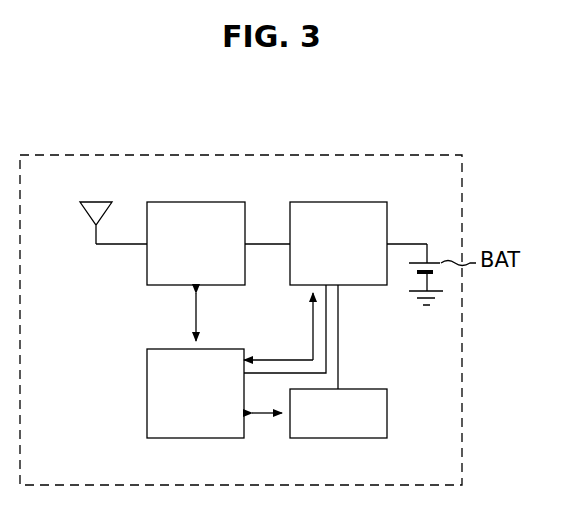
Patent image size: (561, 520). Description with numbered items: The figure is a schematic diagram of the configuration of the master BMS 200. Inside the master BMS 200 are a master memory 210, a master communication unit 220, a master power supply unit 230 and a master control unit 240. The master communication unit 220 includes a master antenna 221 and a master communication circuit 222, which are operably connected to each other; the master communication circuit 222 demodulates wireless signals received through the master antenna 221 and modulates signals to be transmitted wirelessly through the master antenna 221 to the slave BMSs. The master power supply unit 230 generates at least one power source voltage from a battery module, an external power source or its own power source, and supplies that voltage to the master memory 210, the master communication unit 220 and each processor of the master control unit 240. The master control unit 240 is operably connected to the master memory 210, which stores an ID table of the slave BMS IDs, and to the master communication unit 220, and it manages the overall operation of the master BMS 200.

The master BMS 200 is at (360, 156).
The master communication unit 220 is at (112, 272).
The master antenna 221 is at (94, 200).
The master communication circuit 222 is at (180, 201).
The master power supply unit 230 is at (362, 201).
The master control unit 240 is at (180, 348).
The master memory 210 is at (362, 388).